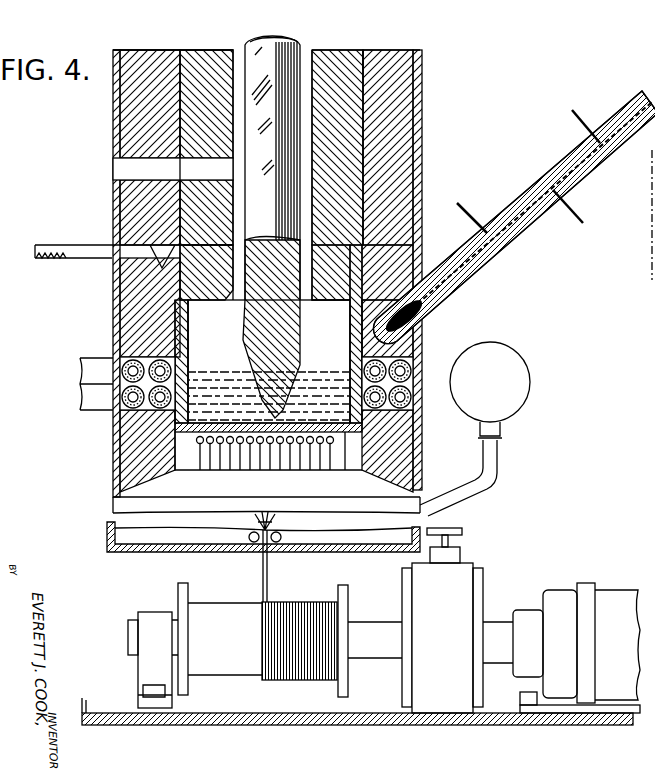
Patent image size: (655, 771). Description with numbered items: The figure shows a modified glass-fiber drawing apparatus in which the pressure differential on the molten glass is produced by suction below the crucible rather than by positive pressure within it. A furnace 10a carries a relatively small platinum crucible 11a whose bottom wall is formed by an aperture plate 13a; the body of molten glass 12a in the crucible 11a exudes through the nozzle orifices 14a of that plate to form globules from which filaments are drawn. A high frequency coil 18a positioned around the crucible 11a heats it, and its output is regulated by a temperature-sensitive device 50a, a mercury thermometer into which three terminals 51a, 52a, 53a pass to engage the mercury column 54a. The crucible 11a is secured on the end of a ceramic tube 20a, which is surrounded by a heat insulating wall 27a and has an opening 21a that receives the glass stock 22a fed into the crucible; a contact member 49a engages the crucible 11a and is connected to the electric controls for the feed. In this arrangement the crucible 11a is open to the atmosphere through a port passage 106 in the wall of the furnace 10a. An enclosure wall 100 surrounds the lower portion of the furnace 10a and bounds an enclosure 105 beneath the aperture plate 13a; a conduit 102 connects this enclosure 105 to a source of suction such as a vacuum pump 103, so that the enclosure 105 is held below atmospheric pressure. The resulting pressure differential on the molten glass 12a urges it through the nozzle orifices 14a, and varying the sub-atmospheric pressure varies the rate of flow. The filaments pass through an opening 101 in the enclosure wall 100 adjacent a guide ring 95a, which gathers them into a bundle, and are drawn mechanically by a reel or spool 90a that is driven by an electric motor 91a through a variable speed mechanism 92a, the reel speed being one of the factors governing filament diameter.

The furnace 10a is at (430, 109).
The aperture plate 13a is at (308, 141).
The port passage 106 is at (132, 176).
The heat insulating wall 27a is at (350, 77).
The ceramic tube 20a is at (388, 56).
The opening 21a is at (307, 62).
The glass stock 22a is at (282, 46).
The contact member 49a is at (113, 288).
The crucible 11a is at (194, 342).
The molten glass body 12a is at (312, 373).
The nozzle orifices 14a is at (214, 444).
The high frequency coil 18a is at (414, 374).
The temperature-sensitive device 50a is at (514, 217).
The terminal 51a is at (472, 197).
The terminal 52a is at (581, 221).
The terminal 53a is at (577, 113).
The mercury column 54a is at (497, 246).
The vacuum pump 103 is at (500, 384).
The conduit 102 is at (470, 476).
The enclosure 105 is at (140, 502).
The enclosure wall 100 is at (130, 553).
The opening 101 is at (262, 548).
The guide ring 95a is at (280, 544).
The reel or spool 90a is at (346, 597).
The variable speed mechanism 92a is at (452, 642).
The electric motor 91a is at (626, 622).